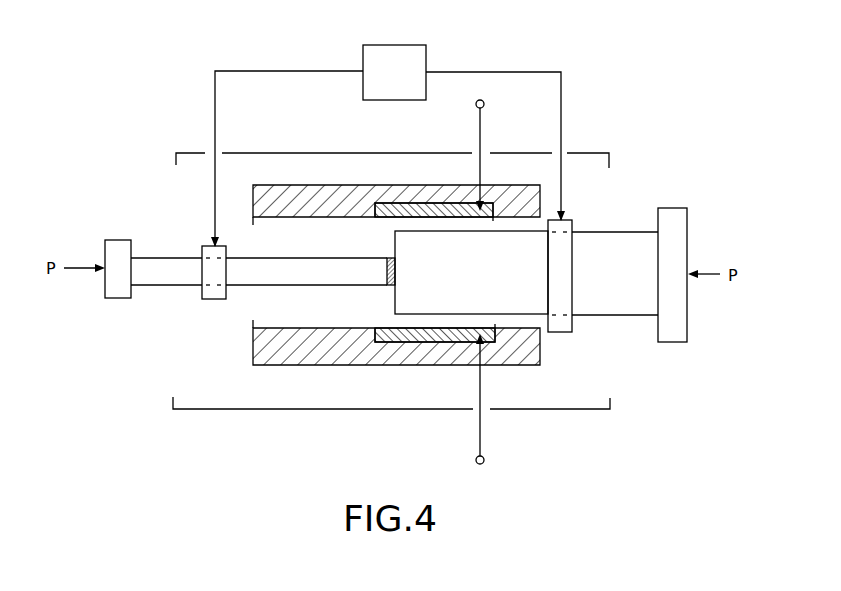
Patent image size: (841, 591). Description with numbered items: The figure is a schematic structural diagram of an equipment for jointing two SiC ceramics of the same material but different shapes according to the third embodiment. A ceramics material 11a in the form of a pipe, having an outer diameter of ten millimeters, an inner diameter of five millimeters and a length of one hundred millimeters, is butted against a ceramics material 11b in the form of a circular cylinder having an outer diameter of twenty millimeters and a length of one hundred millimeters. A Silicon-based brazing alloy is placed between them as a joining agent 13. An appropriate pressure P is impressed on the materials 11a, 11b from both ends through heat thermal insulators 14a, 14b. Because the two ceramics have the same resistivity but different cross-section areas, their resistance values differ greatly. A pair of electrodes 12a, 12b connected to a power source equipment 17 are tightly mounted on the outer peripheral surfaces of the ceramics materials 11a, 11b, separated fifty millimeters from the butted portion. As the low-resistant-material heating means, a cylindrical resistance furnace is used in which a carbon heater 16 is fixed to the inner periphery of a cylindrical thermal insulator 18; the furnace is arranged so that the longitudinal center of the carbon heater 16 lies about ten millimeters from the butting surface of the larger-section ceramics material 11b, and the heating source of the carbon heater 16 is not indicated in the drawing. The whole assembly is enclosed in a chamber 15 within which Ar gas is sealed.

The ceramics material 11a is at (256, 278).
The ceramics material 11b is at (407, 298).
The electrode 12a is at (208, 273).
The electrode 12b is at (565, 257).
The joining agent 13 is at (386, 258).
The heat thermal insulator 14a is at (118, 247).
The heat thermal insulator 14b is at (672, 217).
The chamber 15 is at (192, 148).
The carbon heater 16 is at (432, 343).
The power source equipment 17 is at (412, 53).
The cylindrical thermal insulator 18 is at (330, 358).